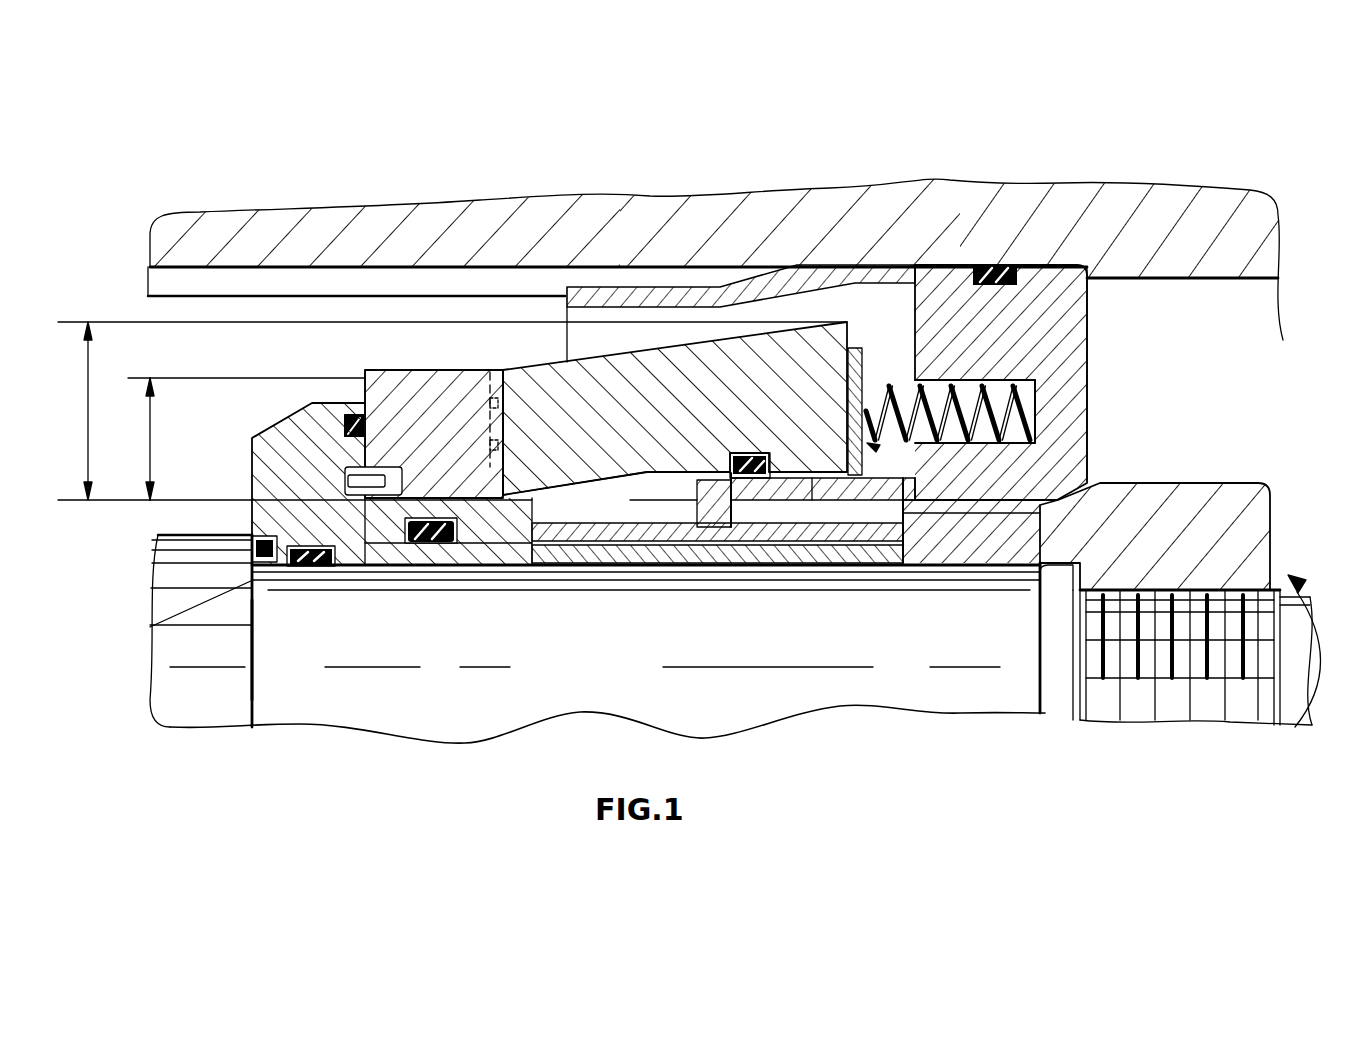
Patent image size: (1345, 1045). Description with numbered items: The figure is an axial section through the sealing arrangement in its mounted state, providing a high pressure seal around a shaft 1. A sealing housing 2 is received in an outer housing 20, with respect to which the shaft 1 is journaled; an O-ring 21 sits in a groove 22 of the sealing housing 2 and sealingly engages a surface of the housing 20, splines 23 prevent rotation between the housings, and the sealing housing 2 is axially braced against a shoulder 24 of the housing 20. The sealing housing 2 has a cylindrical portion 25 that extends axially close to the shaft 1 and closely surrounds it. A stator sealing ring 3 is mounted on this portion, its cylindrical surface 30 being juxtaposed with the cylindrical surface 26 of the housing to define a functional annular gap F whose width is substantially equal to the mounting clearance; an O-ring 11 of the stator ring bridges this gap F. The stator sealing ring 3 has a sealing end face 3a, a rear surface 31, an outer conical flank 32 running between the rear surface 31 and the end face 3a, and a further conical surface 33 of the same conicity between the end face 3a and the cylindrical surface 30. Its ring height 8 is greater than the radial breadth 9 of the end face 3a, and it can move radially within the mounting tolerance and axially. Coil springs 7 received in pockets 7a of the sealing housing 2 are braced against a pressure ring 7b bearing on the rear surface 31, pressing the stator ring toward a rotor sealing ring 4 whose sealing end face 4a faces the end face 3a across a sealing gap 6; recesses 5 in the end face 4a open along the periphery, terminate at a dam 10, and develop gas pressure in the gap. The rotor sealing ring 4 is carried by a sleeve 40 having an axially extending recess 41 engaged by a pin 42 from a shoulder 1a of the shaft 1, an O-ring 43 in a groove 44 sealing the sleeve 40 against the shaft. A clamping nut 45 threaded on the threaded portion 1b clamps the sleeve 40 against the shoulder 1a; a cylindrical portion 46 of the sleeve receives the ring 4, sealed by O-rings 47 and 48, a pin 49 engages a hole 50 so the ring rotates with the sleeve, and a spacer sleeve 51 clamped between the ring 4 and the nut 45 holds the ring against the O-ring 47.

The shaft 1 is at (967, 693).
The shoulder of the shaft 1a is at (252, 647).
The threaded portion of the shaft 1b is at (1250, 580).
The sealing housing 2 is at (937, 287).
The stator sealing ring 3 is at (798, 350).
The sealing end face 3a is at (483, 548).
The rotor sealing ring 4 is at (410, 407).
The sealing end face of the rotor sealing ring 4a is at (505, 375).
The recesses 5 is at (478, 367).
The sealing gap 6 is at (480, 445).
The coil springs 7 is at (1037, 400).
The pockets 7a is at (1017, 442).
The pressure ring 7b is at (870, 445).
The ring height 8 is at (83, 413).
The radial breadth of the sealing end face 9 is at (147, 440).
The dam 10 is at (545, 565).
The O-ring 11 is at (770, 478).
The housing 20 is at (1185, 278).
The O-ring 21 is at (997, 268).
The groove 22 is at (1033, 262).
The splines 23 is at (163, 273).
The shoulder 24 is at (1077, 282).
The cylindrical portion 25 is at (927, 507).
The cylindrical surface of the housing 26 is at (880, 473).
The cylindrical surface 30 is at (833, 490).
The rear surface 31 is at (850, 358).
The outer conical flank 32 is at (600, 348).
The further conical surface 33 is at (612, 485).
The sleeve 40 is at (253, 520).
The axially extending recess 41 is at (150, 627).
The pin 42 is at (253, 543).
The O-ring 43 is at (310, 566).
The groove 44 is at (343, 565).
The clamping nut 45 is at (1178, 503).
The cylindrical portion of the sleeve 46 is at (497, 565).
The O-ring 47 is at (343, 413).
The O-ring 48 is at (410, 545).
The pin 49 is at (345, 470).
The hole 50 is at (355, 483).
The spacer sleeve 51 is at (660, 500).
The functional annular gap F is at (748, 500).